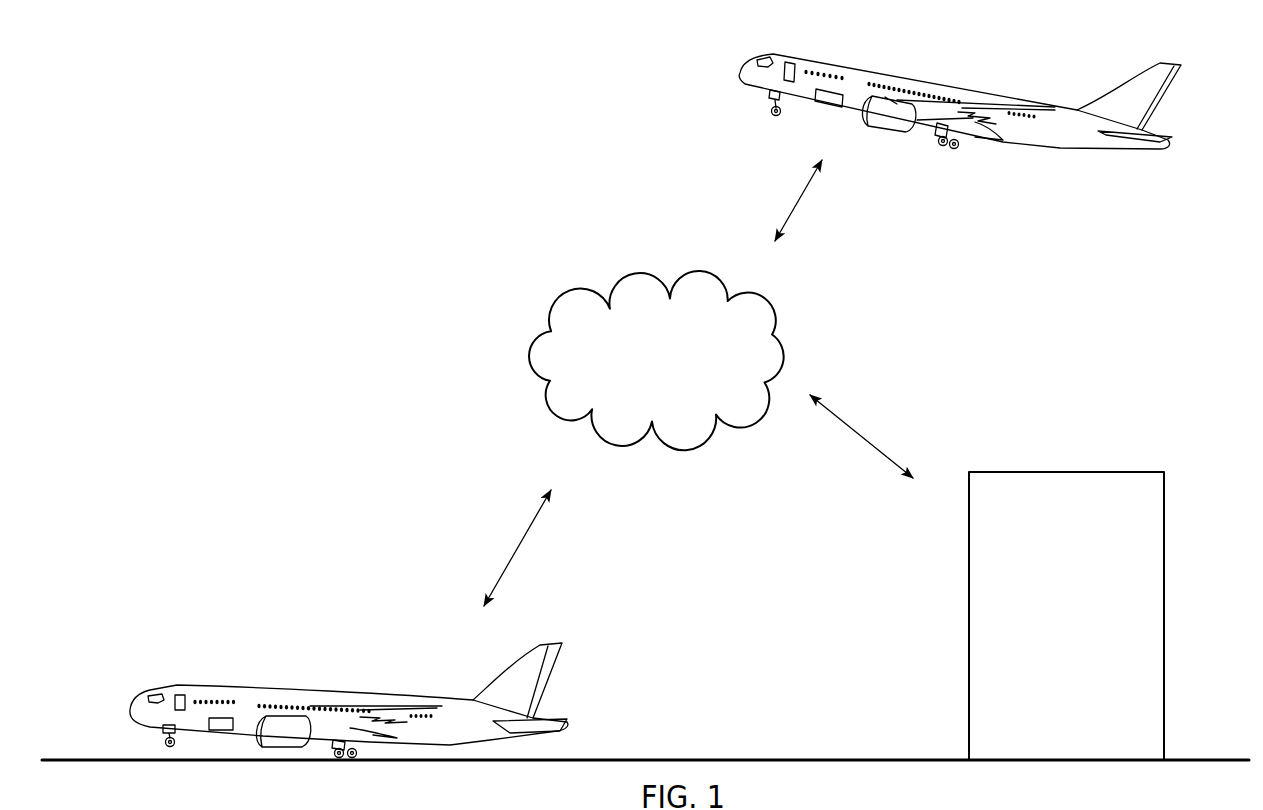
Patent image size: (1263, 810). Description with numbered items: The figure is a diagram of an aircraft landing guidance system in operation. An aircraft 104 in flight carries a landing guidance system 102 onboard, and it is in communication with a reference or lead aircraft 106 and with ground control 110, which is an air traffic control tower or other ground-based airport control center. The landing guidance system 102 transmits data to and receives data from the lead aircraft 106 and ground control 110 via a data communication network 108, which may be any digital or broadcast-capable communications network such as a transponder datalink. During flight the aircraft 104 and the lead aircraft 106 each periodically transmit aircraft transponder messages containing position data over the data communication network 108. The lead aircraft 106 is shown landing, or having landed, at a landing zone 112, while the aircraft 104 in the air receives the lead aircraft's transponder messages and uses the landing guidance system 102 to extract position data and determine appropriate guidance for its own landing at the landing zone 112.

The landing guidance system 102 is at (828, 102).
The aircraft 104 is at (1181, 65).
The lead aircraft 106 is at (566, 650).
The data communication network 108 is at (775, 300).
The ground control 110 is at (1063, 472).
The landing zone 112 is at (672, 760).